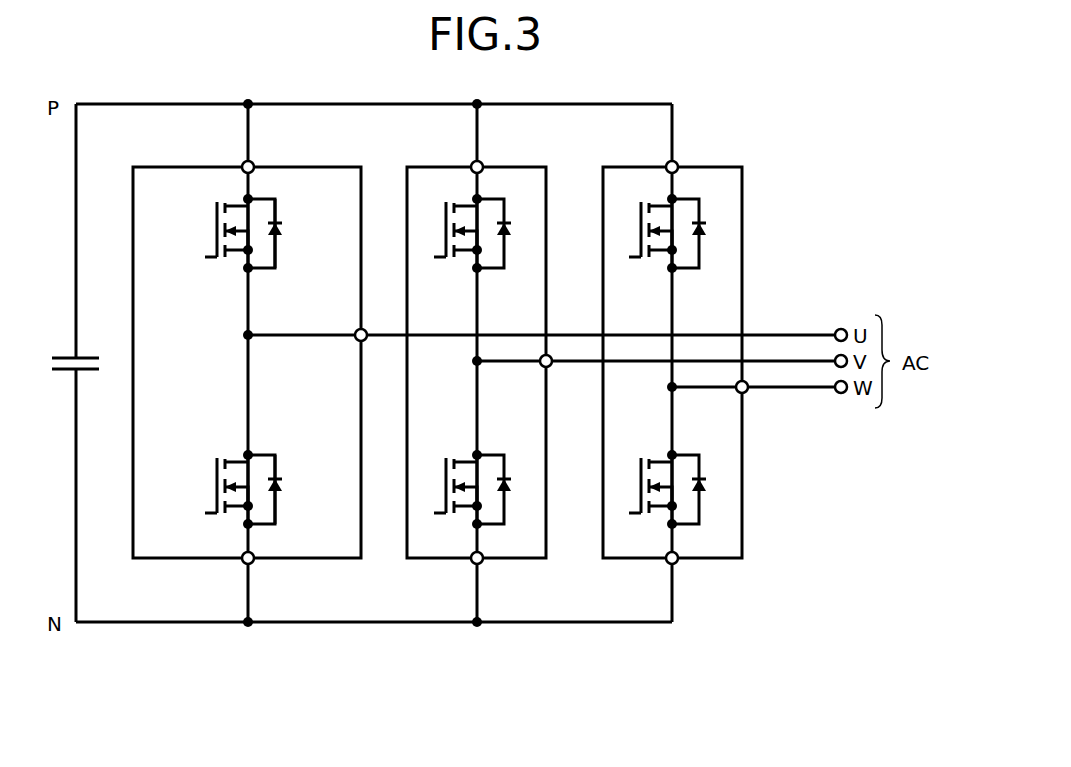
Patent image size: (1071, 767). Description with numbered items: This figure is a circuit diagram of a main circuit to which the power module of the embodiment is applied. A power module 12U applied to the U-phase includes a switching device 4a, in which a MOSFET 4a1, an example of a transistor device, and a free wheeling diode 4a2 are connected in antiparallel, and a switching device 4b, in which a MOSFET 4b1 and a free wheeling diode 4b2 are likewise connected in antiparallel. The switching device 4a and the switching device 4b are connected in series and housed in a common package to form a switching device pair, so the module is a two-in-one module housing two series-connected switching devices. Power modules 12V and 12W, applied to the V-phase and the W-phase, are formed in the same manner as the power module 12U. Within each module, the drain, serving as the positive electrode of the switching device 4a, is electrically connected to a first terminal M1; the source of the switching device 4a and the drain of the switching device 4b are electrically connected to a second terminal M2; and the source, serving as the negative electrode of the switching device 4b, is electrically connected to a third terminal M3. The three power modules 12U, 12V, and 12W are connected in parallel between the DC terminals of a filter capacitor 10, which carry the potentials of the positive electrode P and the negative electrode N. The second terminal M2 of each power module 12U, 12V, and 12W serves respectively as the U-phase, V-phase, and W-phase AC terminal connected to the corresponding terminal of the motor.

The filter capacitor 10 is at (66, 356).
The power module 12U is at (314, 166).
The power module 12V is at (529, 166).
The power module 12W is at (720, 166).
The switching device 4a is at (247, 196).
The MOSFET 4a1 is at (213, 233).
The free wheeling diode 4a2 is at (283, 233).
The switching device 4b is at (247, 531).
The MOSFET 4b1 is at (213, 488).
The free wheeling diode 4b2 is at (283, 488).
The first terminal M1 is at (245, 162).
The second terminal M2 is at (365, 328).
The third terminal M3 is at (245, 566).